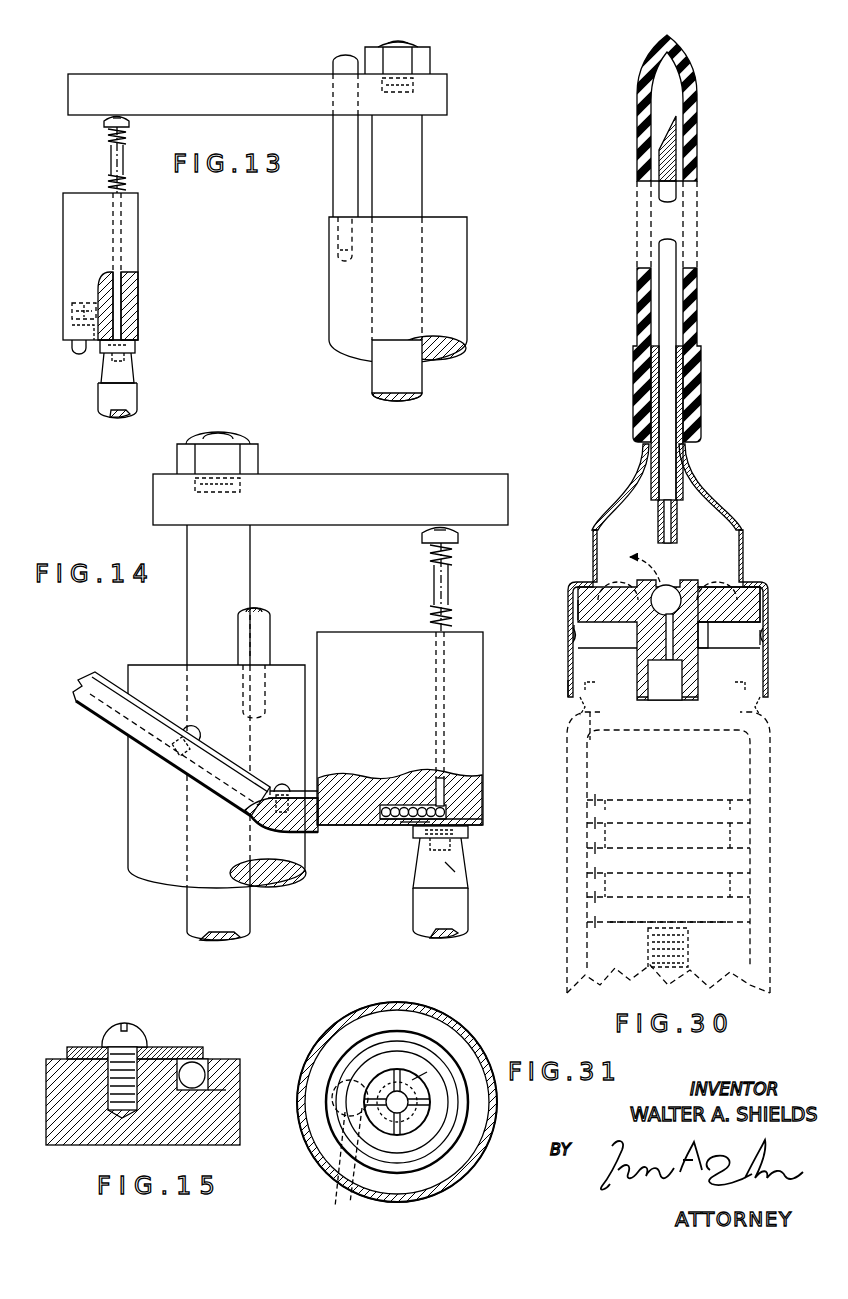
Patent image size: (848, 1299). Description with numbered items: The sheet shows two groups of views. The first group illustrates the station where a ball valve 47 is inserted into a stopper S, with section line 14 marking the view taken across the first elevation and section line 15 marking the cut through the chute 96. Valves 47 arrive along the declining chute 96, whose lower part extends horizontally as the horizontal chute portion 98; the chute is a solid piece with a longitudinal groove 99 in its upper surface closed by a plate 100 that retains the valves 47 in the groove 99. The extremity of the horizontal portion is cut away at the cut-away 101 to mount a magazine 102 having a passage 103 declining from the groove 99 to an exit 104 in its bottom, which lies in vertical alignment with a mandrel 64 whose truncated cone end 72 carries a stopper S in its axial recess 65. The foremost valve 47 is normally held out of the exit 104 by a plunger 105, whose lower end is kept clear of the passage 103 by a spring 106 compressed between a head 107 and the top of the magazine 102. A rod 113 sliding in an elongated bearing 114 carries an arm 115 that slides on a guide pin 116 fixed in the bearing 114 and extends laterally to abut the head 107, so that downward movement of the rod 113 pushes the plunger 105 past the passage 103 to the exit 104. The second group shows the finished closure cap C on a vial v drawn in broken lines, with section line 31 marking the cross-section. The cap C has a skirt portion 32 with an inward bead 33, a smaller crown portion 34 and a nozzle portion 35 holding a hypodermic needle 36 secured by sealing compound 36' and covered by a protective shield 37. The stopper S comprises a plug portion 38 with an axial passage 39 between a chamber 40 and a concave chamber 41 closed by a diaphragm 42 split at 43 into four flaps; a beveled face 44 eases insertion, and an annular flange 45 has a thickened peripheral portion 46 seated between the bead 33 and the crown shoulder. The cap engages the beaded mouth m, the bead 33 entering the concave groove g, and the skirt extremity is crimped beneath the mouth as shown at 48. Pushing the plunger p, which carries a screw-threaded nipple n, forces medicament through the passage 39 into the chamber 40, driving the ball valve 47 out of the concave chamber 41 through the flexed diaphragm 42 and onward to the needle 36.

In FIG. 13, the section line 14— 14 is at (87, 49).
In FIG. 14, the section line 14— 14 is at (88, 451).
In FIG. 14, the section line 15— 15 is at (216, 707).
In FIG. 30, the section line 31— 31 is at (828, 597).
In FIG. 31, the skirt portion 32 is at (342, 1017).
In FIG. 30, the skirt portion 32 is at (568, 682).
In FIG. 30, the bead 33 is at (572, 632).
In FIG. 30, the crown portion 34 is at (746, 530).
In FIG. 30, the nozzle portion 35 is at (642, 458).
In FIG. 30, the hypodermic needle 36 is at (701, 308).
In FIG. 30, the sealing compound 36' is at (697, 444).
In FIG. 30, the protective shield 37 is at (638, 268).
In FIG. 30, the plug portion 38 is at (585, 733).
In FIG. 30, the axial passage 39 is at (664, 645).
In FIG. 30, the chamber 40 is at (668, 704).
In FIG. 30, the concave chamber 41 is at (674, 596).
In FIG. 31, the diaphragm 42 is at (440, 1165).
In FIG. 30, the diaphragm 42 is at (718, 590).
In FIG. 31, the split 43 is at (397, 1070).
In FIG. 30, the split 43 is at (668, 576).
In FIG. 30, the beveled face 44 is at (654, 718).
In FIG. 31, the annular flange 45 is at (435, 1120).
In FIG. 30, the annular flange 45 is at (740, 565).
In FIG. 14, the peripheral portion 46 is at (468, 838).
In FIG. 15, the peripheral portion 46 is at (202, 1047).
In FIG. 31, the peripheral portion 46 is at (330, 1054).
In FIG. 30, the peripheral portion 46 is at (582, 600).
In FIG. 13, the ball valve 47 is at (135, 333).
In FIG. 14, the ball valve 47 is at (452, 811).
In FIG. 15, the ball valve 47 is at (200, 1072).
In FIG. 31, the ball valve 47 is at (345, 1156).
In FIG. 30, the ball valve 47 is at (605, 555).
In FIG. 30, the crimped skirt extremity 48 is at (602, 690).
In FIG. 13, the mandrel 64 is at (137, 401).
In FIG. 14, the mandrel 64 is at (468, 915).
In FIG. 14, the axial recess 65 is at (452, 868).
In FIG. 13, the truncated cone end 72 is at (135, 372).
In FIG. 14, the truncated cone end 72 is at (468, 862).
In FIG. 13, the chute 96 is at (70, 336).
In FIG. 14, the chute 96 is at (92, 712).
In FIG. 15, the chute 96 is at (240, 1128).
In FIG. 14, the horizontal chute portion 98 is at (325, 832).
In FIG. 14, the longitudinal groove 99 is at (280, 786).
In FIG. 15, the longitudinal groove 99 is at (210, 1088).
In FIG. 13, the plate 100 is at (72, 303).
In FIG. 14, the plate 100 is at (112, 683).
In FIG. 15, the plate 100 is at (75, 1047).
In FIG. 14, the cut-away 101 is at (368, 832).
In FIG. 13, the magazine 102 is at (84, 221).
In FIG. 14, the magazine 102 is at (398, 672).
In FIG. 14, the passage 103 is at (387, 774).
In FIG. 14, the exit 104 is at (465, 826).
In FIG. 13, the plunger 105 is at (110, 163).
In FIG. 14, the plunger 105 is at (435, 581).
In FIG. 13, the spring 106 is at (110, 181).
In FIG. 14, the spring 106 is at (429, 595).
In FIG. 13, the head 107 is at (104, 121).
In FIG. 14, the head 107 is at (422, 537).
In FIG. 13, the rod 113 is at (422, 391).
In FIG. 14, the rod 113 is at (205, 936).
In FIG. 13, the bearing 114 is at (467, 300).
In FIG. 14, the bearing 114 is at (166, 866).
In FIG. 13, the arm 115 is at (224, 86).
In FIG. 14, the arm 115 is at (348, 489).
In FIG. 13, the guide pin 116 is at (336, 64).
In FIG. 14, the guide pin 116 is at (262, 619).
In FIG. 31, the closure cap C is at (450, 1010).
In FIG. 30, the closure cap C is at (605, 518).
In FIG. 14, the stopper S is at (410, 832).
In FIG. 31, the stopper S is at (426, 1085).
In FIG. 30, the stopper S is at (702, 647).
In FIG. 30, the concave groove g is at (760, 632).
In FIG. 30, the beaded mouth m is at (754, 696).
In FIG. 30, the vial v is at (765, 797).
In FIG. 30, the plunger p is at (705, 898).
In FIG. 30, the nipple n is at (688, 950).